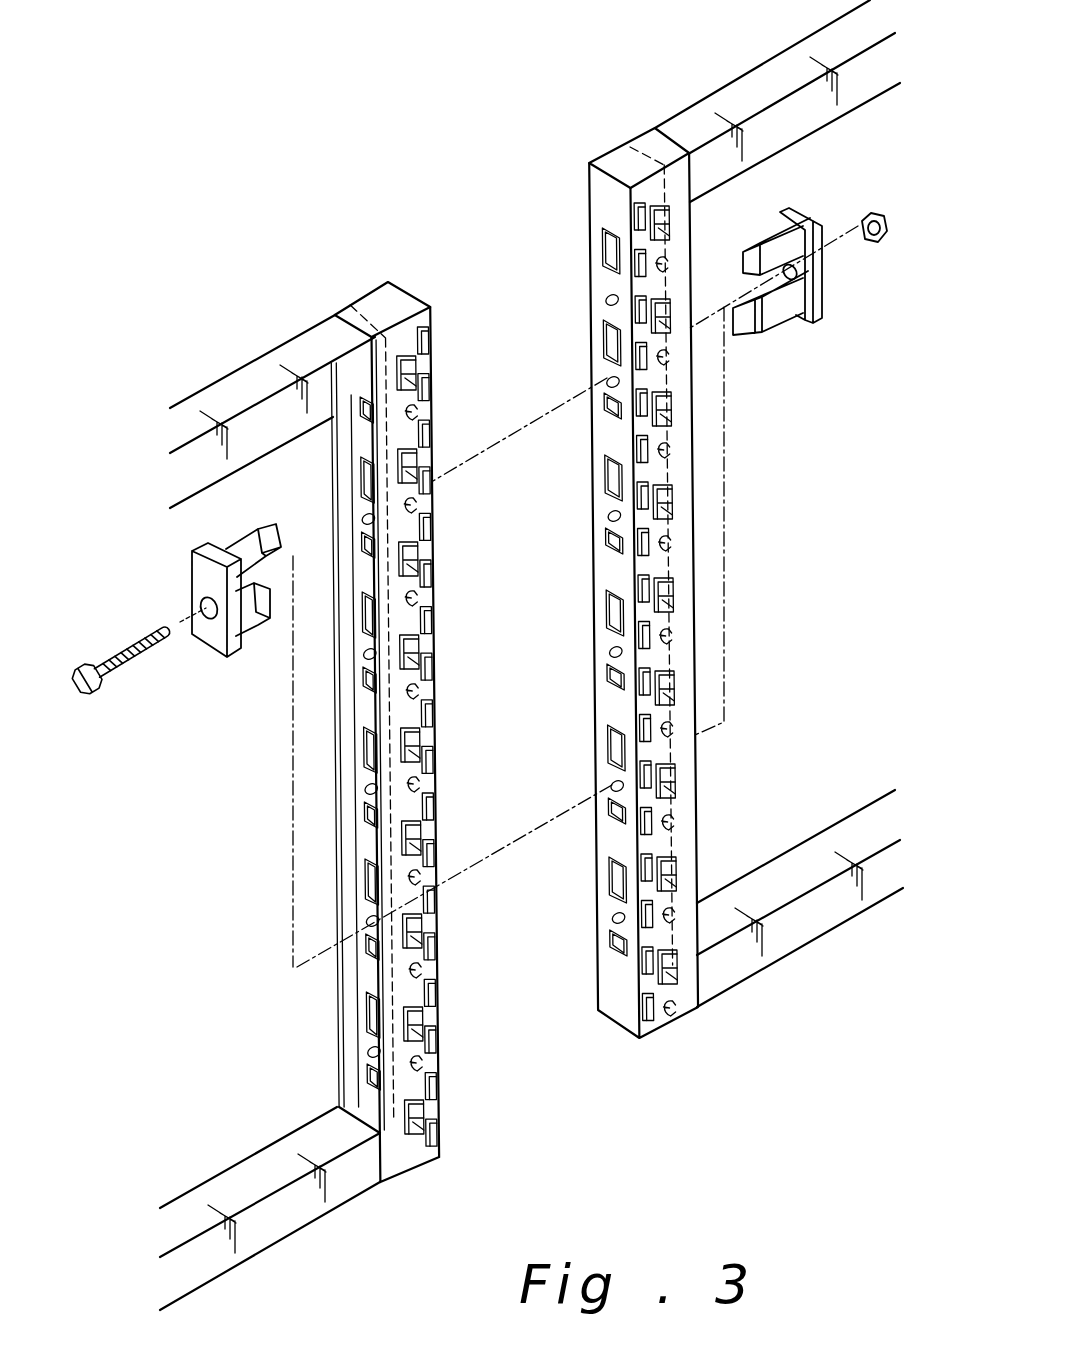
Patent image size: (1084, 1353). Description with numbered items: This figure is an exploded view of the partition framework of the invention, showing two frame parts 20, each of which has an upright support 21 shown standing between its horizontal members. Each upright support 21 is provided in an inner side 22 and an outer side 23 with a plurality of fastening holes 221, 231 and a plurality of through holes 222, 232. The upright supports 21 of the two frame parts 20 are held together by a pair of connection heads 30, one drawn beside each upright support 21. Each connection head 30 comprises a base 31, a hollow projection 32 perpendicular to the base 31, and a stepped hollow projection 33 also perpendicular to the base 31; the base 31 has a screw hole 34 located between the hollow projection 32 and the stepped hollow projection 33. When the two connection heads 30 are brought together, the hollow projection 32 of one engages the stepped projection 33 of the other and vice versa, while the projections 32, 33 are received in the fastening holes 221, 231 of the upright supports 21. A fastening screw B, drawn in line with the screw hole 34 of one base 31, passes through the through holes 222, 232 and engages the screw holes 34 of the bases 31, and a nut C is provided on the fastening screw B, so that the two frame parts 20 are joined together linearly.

The frame part 20 is at (247, 386).
The upright support 21 is at (522, 642).
The inner side 22 is at (367, 968).
The fastening hole 221 is at (365, 1012).
The through hole 222 is at (372, 1052).
The outer side 23 is at (613, 828).
The fastening hole 231 is at (410, 458).
The through hole 232 is at (407, 412).
The connection head 30 is at (512, 473).
The base 31 is at (207, 578).
The hollow projection 32 is at (266, 620).
The stepped hollow projection 33 is at (245, 547).
The screw hole 34 is at (213, 618).
The fastening screw B is at (102, 660).
The nut C is at (889, 220).